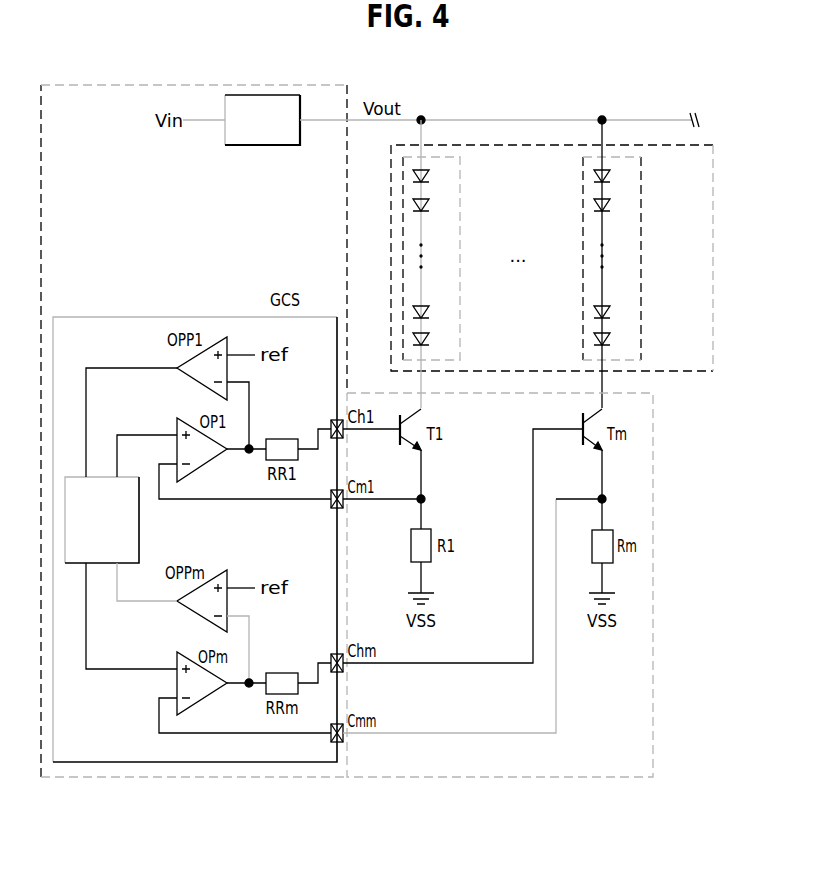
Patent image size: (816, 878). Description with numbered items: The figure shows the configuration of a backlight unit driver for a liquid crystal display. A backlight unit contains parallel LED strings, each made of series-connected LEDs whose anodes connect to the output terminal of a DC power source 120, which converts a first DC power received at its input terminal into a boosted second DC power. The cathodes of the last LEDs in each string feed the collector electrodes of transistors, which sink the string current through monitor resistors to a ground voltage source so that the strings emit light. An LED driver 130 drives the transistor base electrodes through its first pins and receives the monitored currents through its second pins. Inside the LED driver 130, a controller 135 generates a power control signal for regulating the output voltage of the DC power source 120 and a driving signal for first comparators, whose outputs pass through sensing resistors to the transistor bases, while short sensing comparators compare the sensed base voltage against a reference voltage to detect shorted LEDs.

The DC power source 120 is at (262, 120).
The LED driver 130 is at (195, 763).
The controller 135 is at (102, 520).